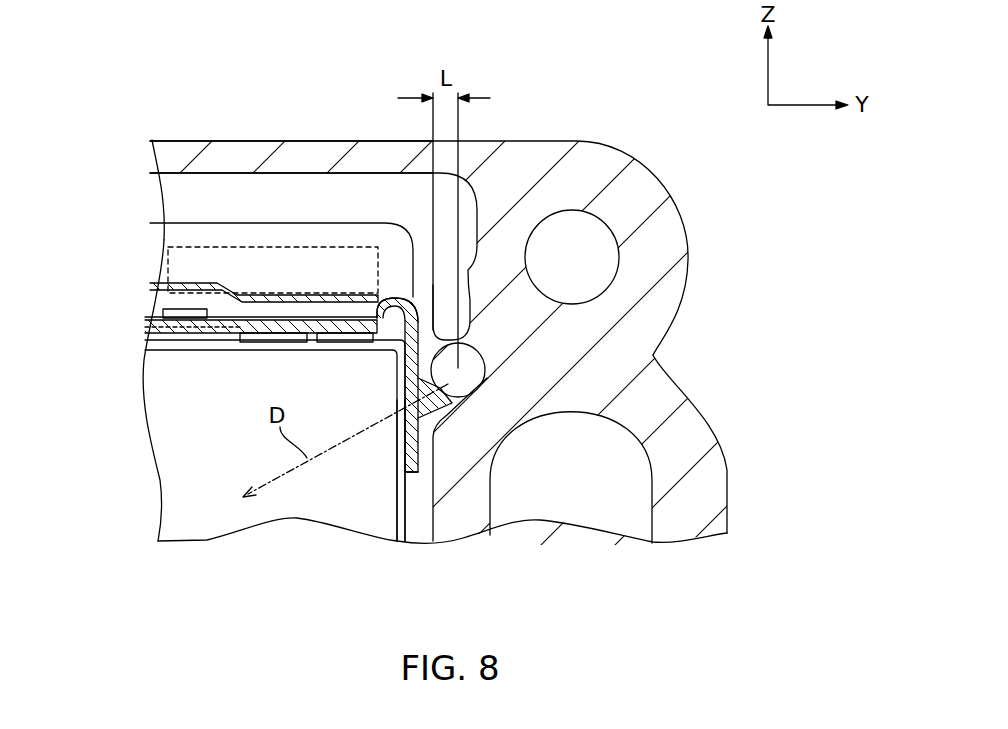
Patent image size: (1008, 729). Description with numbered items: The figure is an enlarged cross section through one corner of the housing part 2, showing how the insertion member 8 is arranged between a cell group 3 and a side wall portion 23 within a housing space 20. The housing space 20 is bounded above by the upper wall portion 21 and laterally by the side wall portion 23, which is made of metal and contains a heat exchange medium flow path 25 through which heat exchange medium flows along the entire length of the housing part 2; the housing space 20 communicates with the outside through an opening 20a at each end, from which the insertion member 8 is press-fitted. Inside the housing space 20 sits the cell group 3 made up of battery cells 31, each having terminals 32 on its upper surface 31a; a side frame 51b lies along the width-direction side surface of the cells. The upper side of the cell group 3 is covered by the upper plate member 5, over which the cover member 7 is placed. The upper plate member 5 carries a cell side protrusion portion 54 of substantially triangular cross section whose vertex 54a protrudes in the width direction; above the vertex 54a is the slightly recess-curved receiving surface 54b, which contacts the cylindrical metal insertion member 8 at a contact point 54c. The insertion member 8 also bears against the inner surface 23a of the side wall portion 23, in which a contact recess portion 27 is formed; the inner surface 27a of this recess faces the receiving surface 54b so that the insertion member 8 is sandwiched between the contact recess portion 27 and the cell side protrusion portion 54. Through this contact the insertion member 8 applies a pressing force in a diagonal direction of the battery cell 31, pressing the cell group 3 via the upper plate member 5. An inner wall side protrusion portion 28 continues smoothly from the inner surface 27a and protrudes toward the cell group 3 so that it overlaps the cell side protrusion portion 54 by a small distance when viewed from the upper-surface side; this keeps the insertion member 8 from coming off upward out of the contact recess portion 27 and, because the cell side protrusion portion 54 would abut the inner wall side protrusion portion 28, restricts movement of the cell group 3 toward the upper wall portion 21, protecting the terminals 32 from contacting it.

The housing part 2 is at (553, 93).
The cell group 3 is at (143, 451).
The upper plate member 5 is at (426, 292).
The cover member 7 is at (328, 222).
The insertion member 8 is at (472, 376).
The housing space 20 is at (214, 183).
The opening 20a is at (277, 173).
The upper wall portion 21 is at (367, 140).
The side wall portion 23 is at (733, 477).
The inner surface 23a is at (432, 512).
The heat exchange medium flow path 25 is at (658, 445).
The contact recess portion 27 is at (487, 373).
The inner surface 27a is at (470, 340).
The inner wall side protrusion portion 28 is at (440, 337).
The battery cell 31 is at (185, 493).
The upper surface 31a is at (258, 325).
The terminal 32 is at (143, 312).
The side frame 51b is at (397, 434).
The cell side protrusion portion 54 is at (448, 442).
The vertex 54a is at (452, 436).
The receiving surface 54b is at (404, 378).
The contact point 54c is at (420, 428).